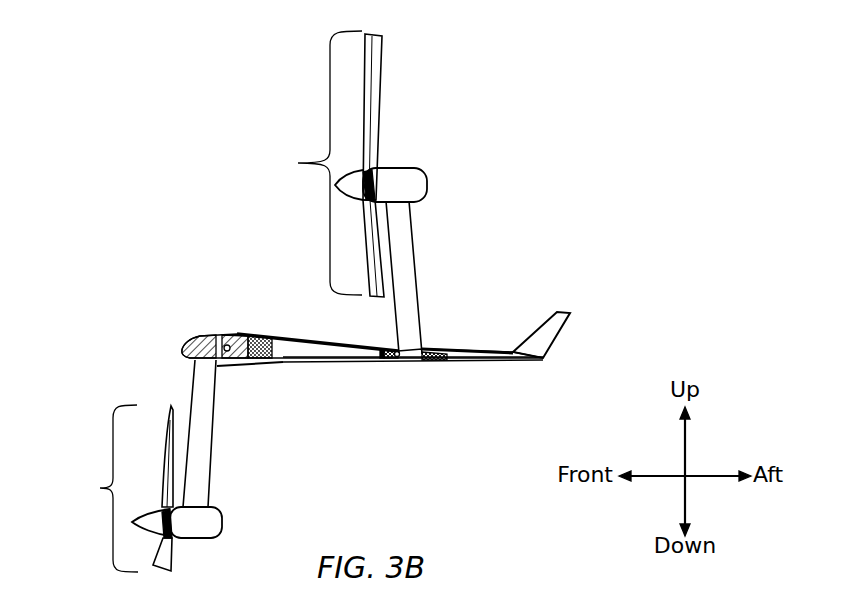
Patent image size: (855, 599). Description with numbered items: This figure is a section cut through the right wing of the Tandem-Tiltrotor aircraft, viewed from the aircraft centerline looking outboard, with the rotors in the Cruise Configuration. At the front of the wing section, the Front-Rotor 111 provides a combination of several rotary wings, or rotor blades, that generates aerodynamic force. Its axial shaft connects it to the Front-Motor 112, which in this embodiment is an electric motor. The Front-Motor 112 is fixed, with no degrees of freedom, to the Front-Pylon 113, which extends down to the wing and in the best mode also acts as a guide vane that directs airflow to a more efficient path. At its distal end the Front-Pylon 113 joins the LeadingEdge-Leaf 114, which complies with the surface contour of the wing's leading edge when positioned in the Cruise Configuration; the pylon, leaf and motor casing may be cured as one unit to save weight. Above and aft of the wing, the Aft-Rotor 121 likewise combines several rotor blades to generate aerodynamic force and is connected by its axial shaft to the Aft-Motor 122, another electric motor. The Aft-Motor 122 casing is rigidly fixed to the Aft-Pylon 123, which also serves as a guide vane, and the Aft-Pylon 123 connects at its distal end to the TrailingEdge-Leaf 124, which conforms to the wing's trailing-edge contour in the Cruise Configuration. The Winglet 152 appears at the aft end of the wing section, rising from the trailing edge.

The Front-Rotor 111 is at (104, 488).
The Front-Motor 112 is at (222, 517).
The Front-Pylon 113 is at (191, 404).
The LeadingEdge-Leaf 114 is at (196, 339).
The Aft-Rotor 121 is at (314, 164).
The Aft-Motor 122 is at (398, 167).
The Aft-Pylon 123 is at (417, 248).
The TrailingEdge-Leaf 124 is at (410, 358).
The Winglet 152 is at (567, 330).